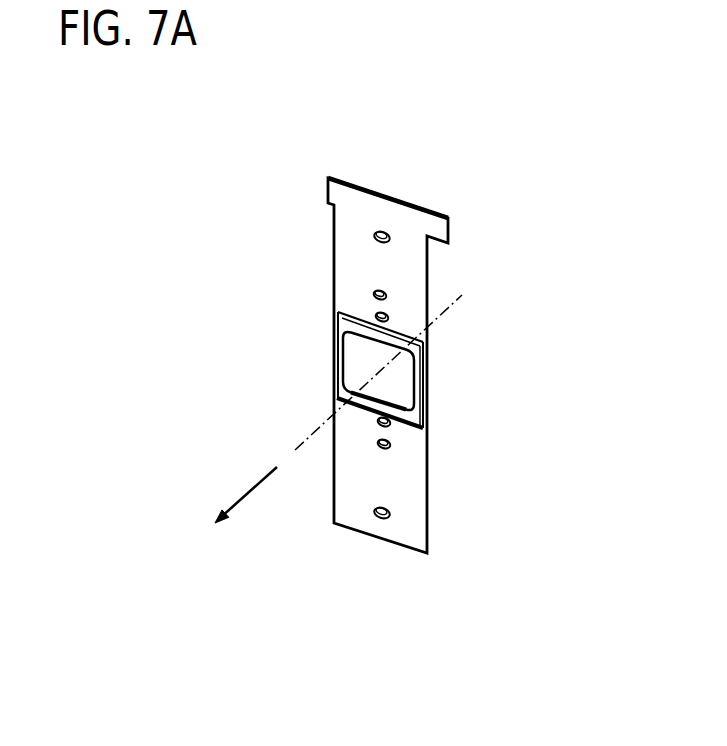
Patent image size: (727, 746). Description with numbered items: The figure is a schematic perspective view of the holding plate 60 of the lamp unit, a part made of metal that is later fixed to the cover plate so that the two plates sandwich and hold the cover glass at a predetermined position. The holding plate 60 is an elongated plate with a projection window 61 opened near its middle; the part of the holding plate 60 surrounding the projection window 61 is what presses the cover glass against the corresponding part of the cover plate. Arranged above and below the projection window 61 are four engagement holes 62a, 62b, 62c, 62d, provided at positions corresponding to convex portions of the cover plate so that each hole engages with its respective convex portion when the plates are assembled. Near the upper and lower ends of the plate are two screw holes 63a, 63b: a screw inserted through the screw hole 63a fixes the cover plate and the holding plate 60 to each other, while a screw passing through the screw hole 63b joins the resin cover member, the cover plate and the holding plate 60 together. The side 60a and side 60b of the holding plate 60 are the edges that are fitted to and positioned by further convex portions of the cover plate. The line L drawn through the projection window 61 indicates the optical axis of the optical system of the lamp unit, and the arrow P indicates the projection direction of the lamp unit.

The holding plate 60 is at (400, 87).
The side of the holding plate 60a is at (427, 350).
The side of the holding plate 60b is at (337, 362).
The projection window 61 is at (419, 380).
The engagement hole 62a is at (375, 293).
The engagement hole 62b is at (388, 316).
The engagement hole 62c is at (389, 424).
The engagement hole 62d is at (389, 447).
The screw hole 63a is at (383, 232).
The screw hole 63b is at (389, 514).
The line indicating the optical axis L is at (327, 421).
The arrow indicating the projection direction P is at (246, 487).